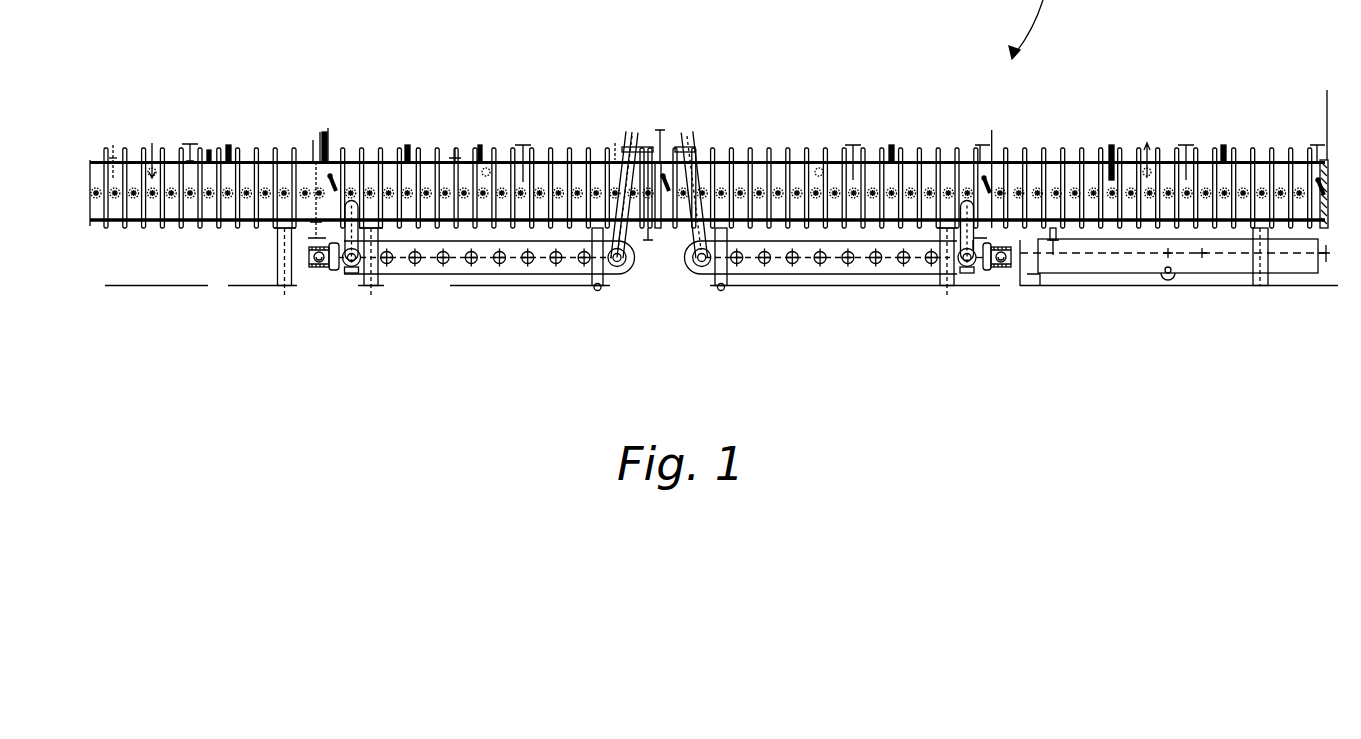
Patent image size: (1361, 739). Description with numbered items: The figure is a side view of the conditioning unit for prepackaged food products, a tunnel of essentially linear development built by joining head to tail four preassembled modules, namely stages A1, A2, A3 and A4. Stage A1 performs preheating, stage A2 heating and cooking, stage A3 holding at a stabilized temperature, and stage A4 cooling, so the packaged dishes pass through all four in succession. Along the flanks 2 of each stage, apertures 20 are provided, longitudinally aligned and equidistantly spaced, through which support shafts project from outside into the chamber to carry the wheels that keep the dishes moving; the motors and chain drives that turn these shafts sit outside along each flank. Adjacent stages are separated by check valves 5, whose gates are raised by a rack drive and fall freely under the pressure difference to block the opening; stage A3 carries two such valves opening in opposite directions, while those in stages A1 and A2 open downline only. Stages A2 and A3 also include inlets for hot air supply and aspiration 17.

The flanks 2 is at (96, 160).
The preheating stage A1 is at (246, 160).
The heating and cooking stage A2 is at (470, 160).
The holding stage A3 is at (818, 160).
The cooling stage A4 is at (1158, 162).
The check valve 5 is at (335, 160).
The inlets for hot air supply and aspiration 17 is at (836, 268).
The apertures 20 is at (172, 200).